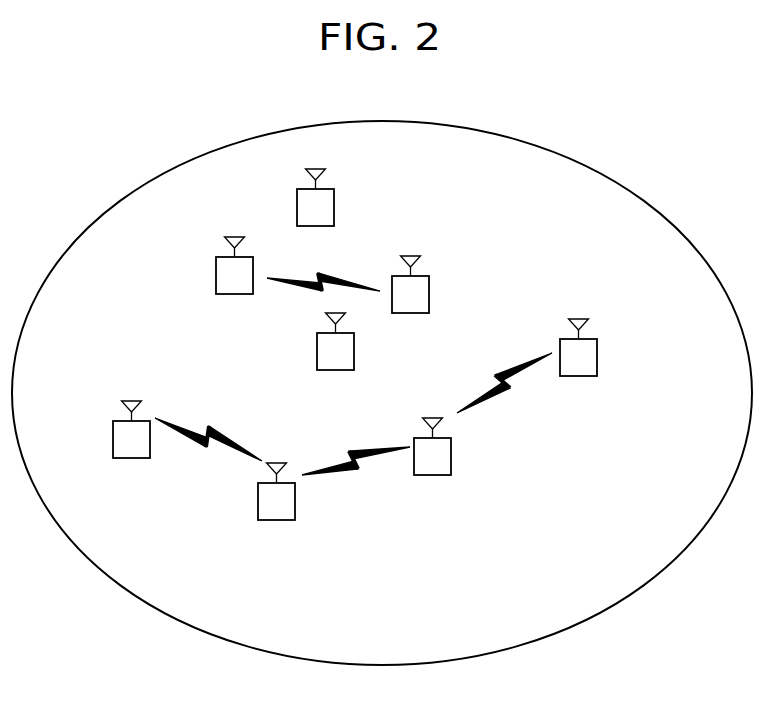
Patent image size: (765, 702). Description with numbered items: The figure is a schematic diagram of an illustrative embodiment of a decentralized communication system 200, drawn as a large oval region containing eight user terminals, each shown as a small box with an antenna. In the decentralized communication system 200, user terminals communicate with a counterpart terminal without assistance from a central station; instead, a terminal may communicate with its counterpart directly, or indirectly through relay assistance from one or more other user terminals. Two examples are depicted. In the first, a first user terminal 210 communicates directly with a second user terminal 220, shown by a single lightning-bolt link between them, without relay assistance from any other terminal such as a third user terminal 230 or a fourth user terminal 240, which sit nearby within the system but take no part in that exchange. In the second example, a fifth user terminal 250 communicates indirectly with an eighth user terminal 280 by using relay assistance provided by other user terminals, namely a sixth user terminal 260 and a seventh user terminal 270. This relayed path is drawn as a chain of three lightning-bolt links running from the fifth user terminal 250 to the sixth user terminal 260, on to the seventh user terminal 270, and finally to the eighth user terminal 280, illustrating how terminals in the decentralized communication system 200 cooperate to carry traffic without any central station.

The decentralized communication system 200 is at (596, 158).
The first user terminal 210 is at (215, 284).
The second user terminal 220 is at (429, 291).
The third user terminal 230 is at (354, 348).
The fourth user terminal 240 is at (334, 204).
The fifth user terminal 250 is at (113, 440).
The sixth user terminal 260 is at (296, 497).
The seventh user terminal 270 is at (452, 455).
The eighth user terminal 280 is at (597, 356).